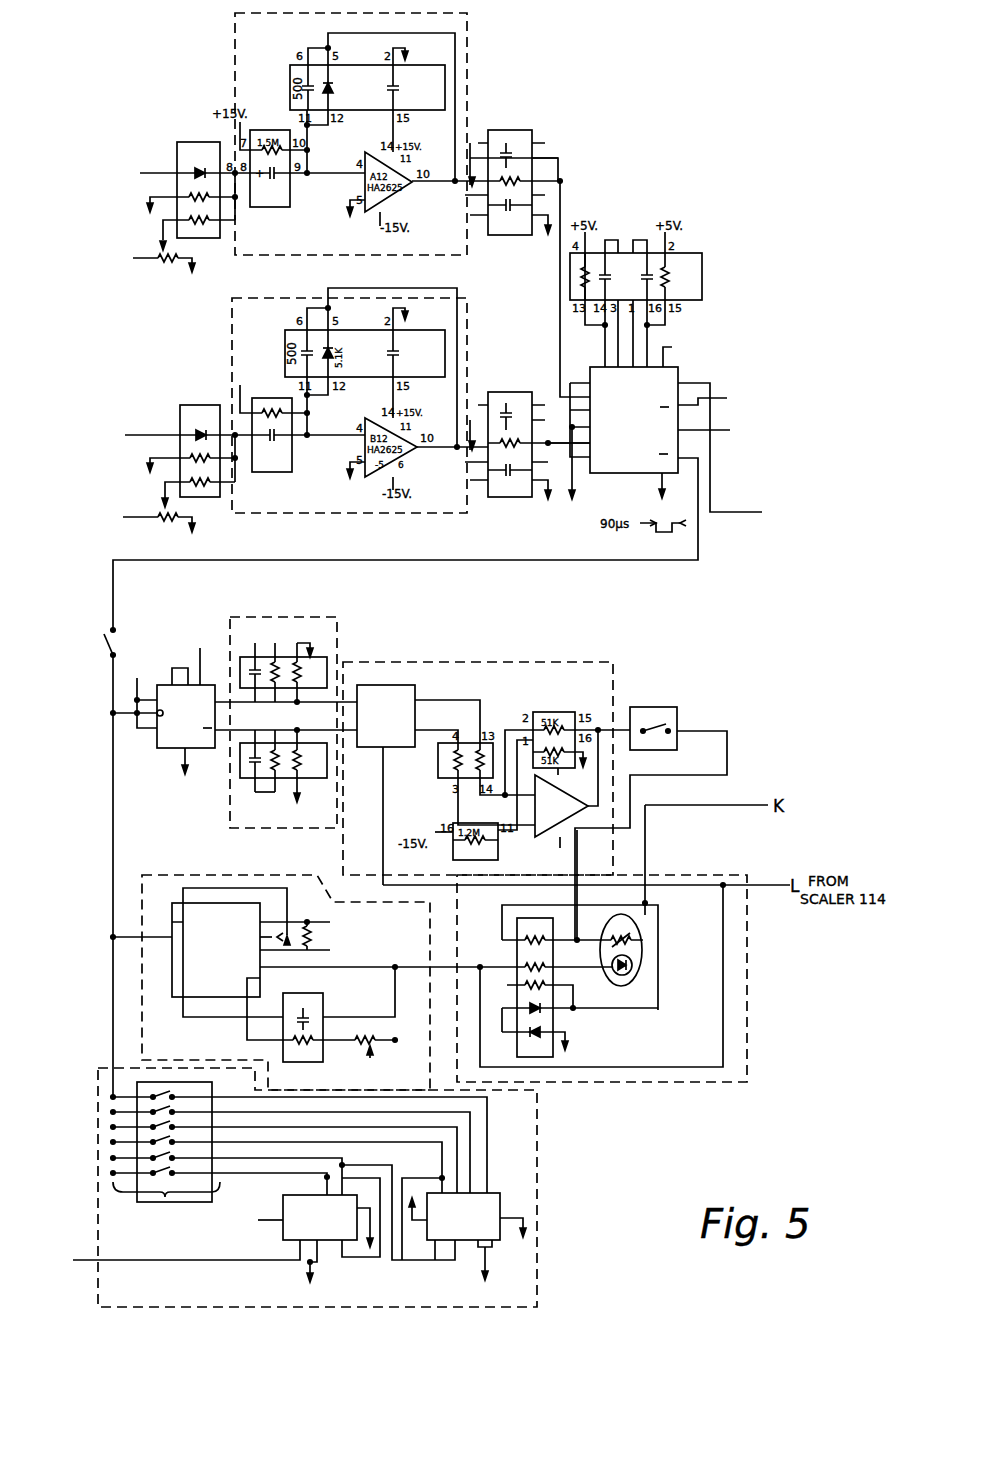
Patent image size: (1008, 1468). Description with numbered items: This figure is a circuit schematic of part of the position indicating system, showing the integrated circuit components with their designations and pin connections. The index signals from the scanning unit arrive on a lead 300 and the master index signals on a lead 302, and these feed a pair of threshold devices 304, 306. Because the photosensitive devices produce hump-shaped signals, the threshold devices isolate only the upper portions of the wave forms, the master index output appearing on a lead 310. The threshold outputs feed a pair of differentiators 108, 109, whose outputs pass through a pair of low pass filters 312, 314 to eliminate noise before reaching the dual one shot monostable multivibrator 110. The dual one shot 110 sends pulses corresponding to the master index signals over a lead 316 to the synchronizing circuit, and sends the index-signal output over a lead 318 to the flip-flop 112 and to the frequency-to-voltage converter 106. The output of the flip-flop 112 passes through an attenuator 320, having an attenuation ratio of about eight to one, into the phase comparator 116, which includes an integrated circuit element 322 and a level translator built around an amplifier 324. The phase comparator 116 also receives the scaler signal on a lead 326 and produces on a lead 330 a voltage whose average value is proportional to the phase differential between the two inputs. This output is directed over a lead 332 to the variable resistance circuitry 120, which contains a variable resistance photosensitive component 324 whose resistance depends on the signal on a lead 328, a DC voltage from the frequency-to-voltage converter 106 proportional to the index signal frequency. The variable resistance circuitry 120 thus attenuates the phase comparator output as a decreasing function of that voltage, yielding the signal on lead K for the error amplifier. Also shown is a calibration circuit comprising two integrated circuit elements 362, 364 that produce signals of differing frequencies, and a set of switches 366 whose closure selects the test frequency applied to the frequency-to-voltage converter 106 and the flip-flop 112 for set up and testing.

The frequency-to-voltage converter 106 is at (142, 955).
The differentiator 108 is at (468, 52).
The differentiator 109 is at (468, 338).
The dual one shot monostable multivibrator 110 is at (680, 366).
The flip-flop 112 is at (175, 752).
The phase comparator 116 is at (415, 660).
The variable resistance circuitry 120 is at (720, 1082).
The lead 300 is at (138, 432).
The lead 302 is at (143, 166).
The threshold device 304 is at (193, 140).
The threshold device 306 is at (200, 405).
The lead 310 is at (243, 440).
The low pass filter 312 is at (512, 130).
The low pass filter 314 is at (505, 392).
The lead 316 is at (712, 486).
The lead 318 is at (330, 560).
The attenuator 320 is at (290, 617).
The integrated circuit element 322 is at (415, 686).
The amplifier / variable resistance photosensitive component 324 is at (598, 840).
The lead 326 is at (392, 800).
The lead 328 is at (443, 962).
The lead 330 is at (727, 760).
The lead 332 is at (577, 925).
The integrated circuit element 362 is at (283, 1232).
The integrated circuit element 364 is at (495, 1195).
The switches 366 is at (166, 1198).